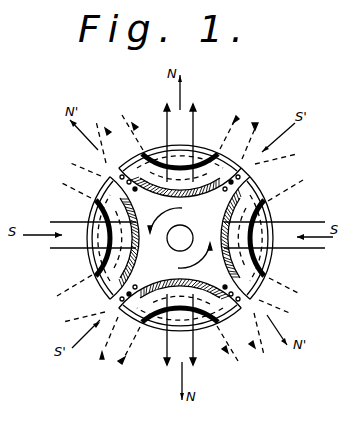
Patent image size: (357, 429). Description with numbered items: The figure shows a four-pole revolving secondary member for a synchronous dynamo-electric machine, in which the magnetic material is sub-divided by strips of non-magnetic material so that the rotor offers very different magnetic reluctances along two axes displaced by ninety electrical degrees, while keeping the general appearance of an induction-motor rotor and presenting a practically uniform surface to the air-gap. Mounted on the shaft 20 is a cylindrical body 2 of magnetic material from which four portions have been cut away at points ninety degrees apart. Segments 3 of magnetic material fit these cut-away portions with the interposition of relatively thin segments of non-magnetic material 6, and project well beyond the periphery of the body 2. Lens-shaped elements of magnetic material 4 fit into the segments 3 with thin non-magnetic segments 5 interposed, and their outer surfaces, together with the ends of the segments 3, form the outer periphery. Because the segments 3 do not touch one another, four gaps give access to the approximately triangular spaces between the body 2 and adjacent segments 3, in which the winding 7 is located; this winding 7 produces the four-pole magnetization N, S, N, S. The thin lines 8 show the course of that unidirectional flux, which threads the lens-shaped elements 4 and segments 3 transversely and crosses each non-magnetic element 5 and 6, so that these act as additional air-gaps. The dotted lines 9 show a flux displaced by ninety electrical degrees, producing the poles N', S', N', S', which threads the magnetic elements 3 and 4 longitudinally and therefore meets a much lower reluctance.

The body 2 is at (252, 181).
The segments 3 is at (250, 170).
The lens-shaped elements 4 is at (197, 138).
The non-magnetic segments 5 is at (142, 150).
The non-magnetic material segments 6 is at (137, 245).
The winding 7 is at (122, 164).
The magnetic lines 8 is at (183, 234).
The magnetic flux 9 is at (78, 157).
The shaft 20 is at (180, 238).